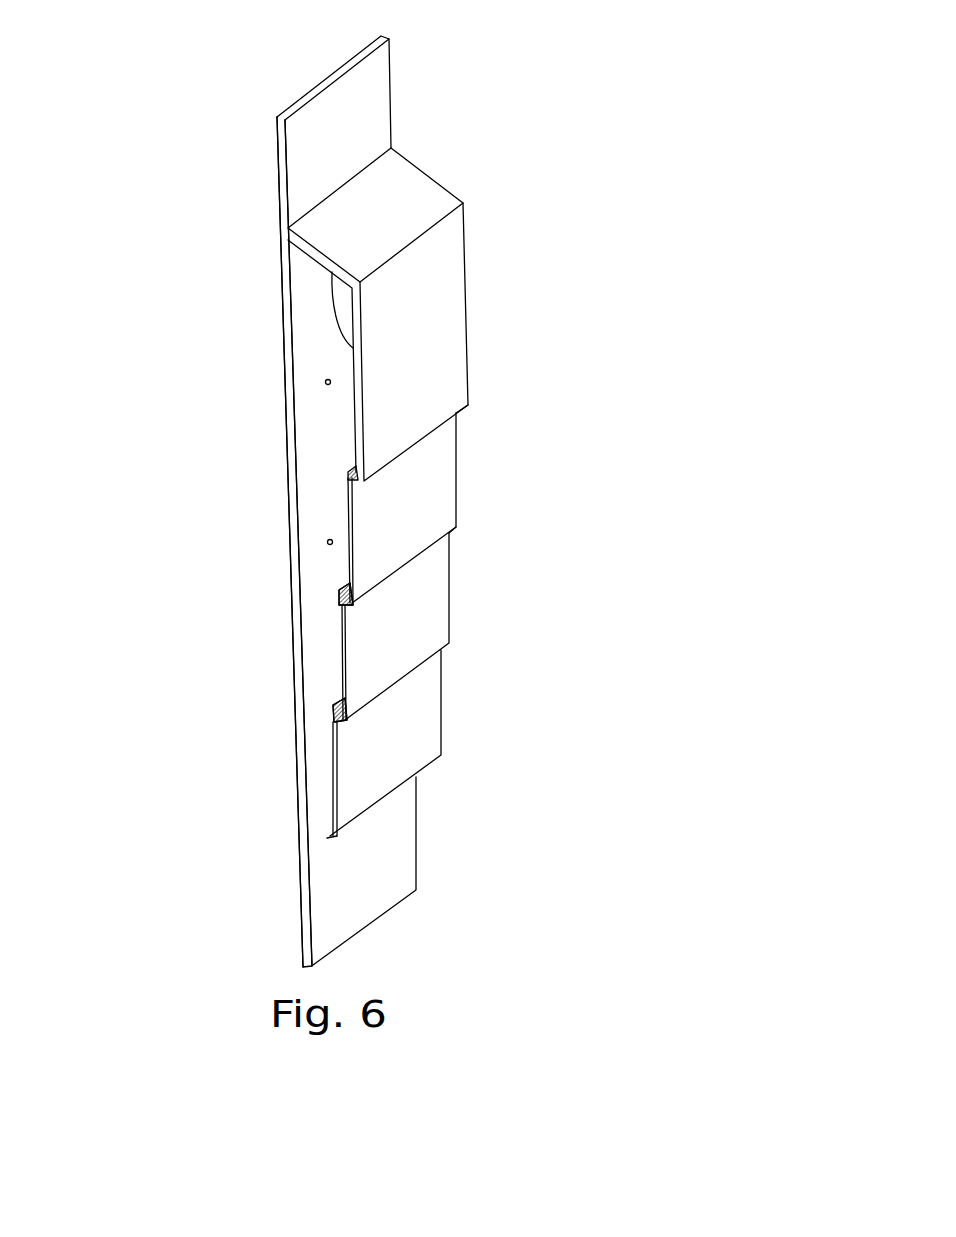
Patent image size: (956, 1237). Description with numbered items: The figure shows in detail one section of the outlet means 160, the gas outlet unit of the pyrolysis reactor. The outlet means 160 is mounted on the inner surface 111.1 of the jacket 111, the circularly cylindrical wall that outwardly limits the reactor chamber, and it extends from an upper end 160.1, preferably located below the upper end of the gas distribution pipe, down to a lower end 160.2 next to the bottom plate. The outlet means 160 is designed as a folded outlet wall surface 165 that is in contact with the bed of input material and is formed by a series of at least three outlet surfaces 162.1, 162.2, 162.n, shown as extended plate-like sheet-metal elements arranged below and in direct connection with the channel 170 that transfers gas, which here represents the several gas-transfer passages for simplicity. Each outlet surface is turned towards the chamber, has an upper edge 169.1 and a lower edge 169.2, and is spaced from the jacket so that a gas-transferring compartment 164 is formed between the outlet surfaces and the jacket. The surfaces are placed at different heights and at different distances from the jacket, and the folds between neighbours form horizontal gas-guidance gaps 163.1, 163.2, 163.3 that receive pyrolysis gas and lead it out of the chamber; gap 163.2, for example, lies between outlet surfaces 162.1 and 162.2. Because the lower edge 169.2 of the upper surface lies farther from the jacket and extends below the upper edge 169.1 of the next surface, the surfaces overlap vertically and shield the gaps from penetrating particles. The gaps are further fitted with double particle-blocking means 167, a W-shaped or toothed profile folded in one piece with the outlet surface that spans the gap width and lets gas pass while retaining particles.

The outlet means 160 is at (153, 268).
The upper end of the outlet means 160.1 is at (450, 157).
The lower end of the outlet means 160.2 is at (418, 785).
The outlet wall surface 165 is at (478, 362).
The inner surface of the jacket 111.1 is at (312, 357).
The channel 170 is at (325, 382).
The upper edge of the outlet surface 169.1 is at (333, 607).
The lower edge of the outlet surface 169.2 is at (356, 614).
The gas-guidance compartment 164 is at (327, 542).
The particle-blocking means 167 is at (338, 700).
The gas-guidance gap 163.1 is at (466, 415).
The gas-guidance gap 163.2 is at (455, 531).
The gas-guidance gap 163.3 is at (332, 713).
The outlet surface 162.1 is at (418, 506).
The outlet surface 162.2 is at (413, 608).
The outlet surface 162.n is at (414, 723).
The jacket 111 is at (299, 803).